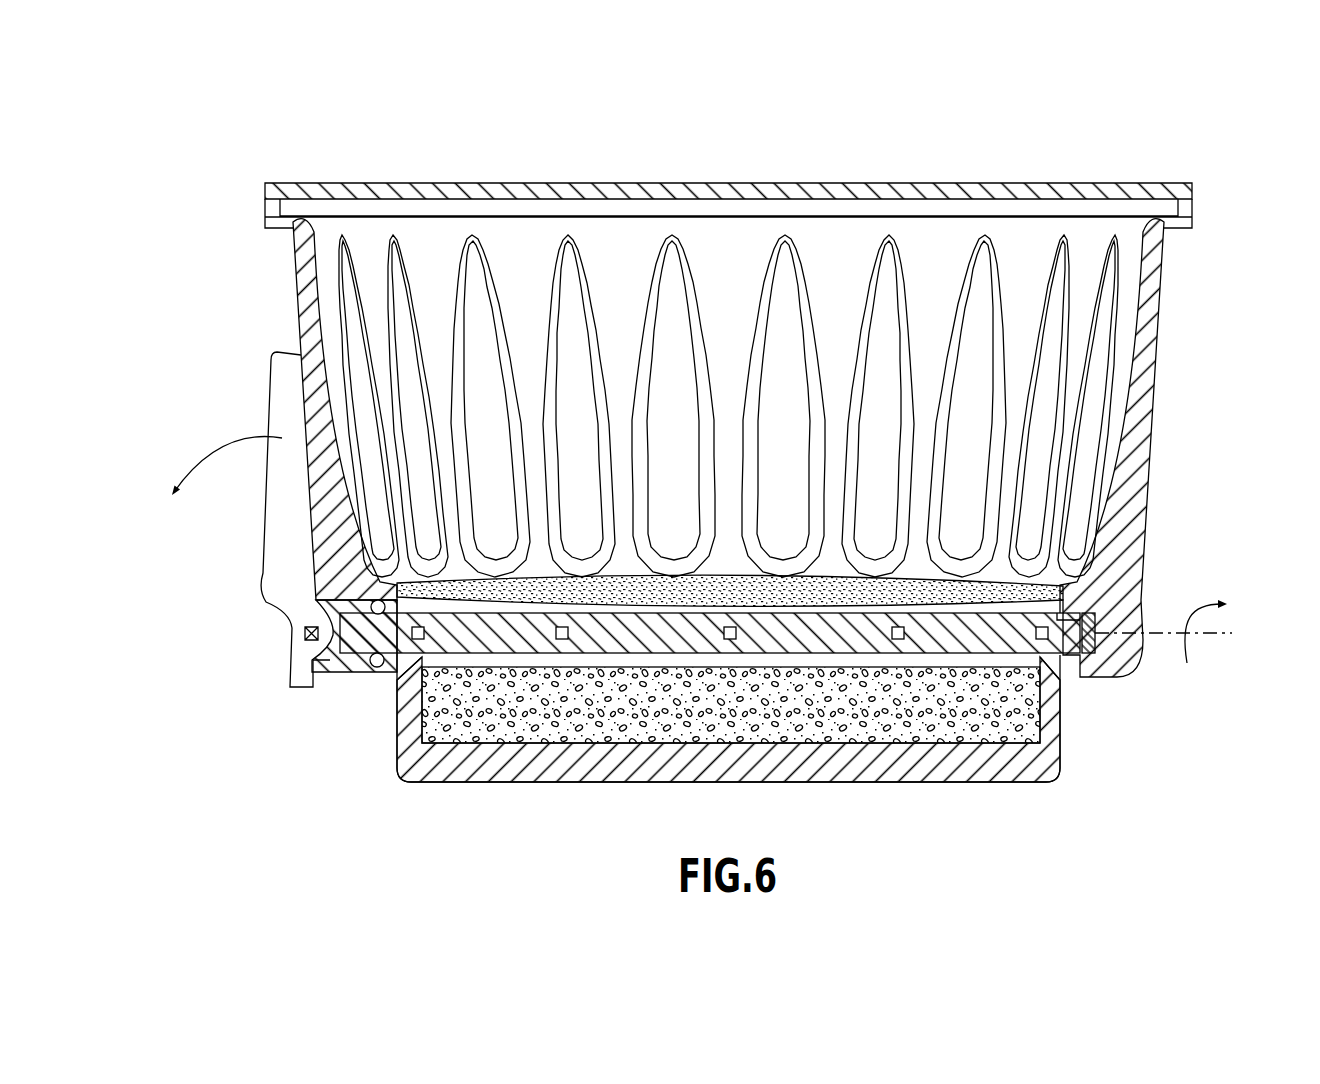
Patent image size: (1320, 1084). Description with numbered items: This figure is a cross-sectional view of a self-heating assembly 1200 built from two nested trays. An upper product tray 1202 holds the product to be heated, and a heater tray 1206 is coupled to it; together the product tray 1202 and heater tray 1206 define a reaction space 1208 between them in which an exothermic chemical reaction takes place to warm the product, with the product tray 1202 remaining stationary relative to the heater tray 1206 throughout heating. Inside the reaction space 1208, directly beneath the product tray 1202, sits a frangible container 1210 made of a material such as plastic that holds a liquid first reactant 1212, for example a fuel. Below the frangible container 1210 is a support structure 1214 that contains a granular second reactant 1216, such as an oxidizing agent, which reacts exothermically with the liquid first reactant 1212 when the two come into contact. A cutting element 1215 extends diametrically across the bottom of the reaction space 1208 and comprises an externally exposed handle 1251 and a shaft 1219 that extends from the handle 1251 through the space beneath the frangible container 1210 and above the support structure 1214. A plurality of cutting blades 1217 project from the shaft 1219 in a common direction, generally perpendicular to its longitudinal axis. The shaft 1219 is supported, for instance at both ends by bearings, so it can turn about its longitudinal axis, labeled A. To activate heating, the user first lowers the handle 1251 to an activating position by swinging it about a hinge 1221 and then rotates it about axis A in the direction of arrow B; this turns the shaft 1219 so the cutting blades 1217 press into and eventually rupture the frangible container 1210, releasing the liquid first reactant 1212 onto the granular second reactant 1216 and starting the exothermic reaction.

The self-heating assembly 1200 is at (237, 128).
The product tray 1202 is at (1133, 323).
The heater tray 1206 is at (1150, 420).
The reaction space 1208 is at (1083, 498).
The frangible container 1210 is at (420, 686).
The liquid first reactant 1212 is at (453, 603).
The support structure 1214 is at (592, 732).
The cutting element 1215 is at (372, 665).
The granular second reactant 1216 is at (928, 708).
The cutting blades 1217 is at (897, 640).
The shaft 1219 is at (1002, 637).
The hinge 1221 is at (305, 637).
The handle 1251 is at (285, 543).